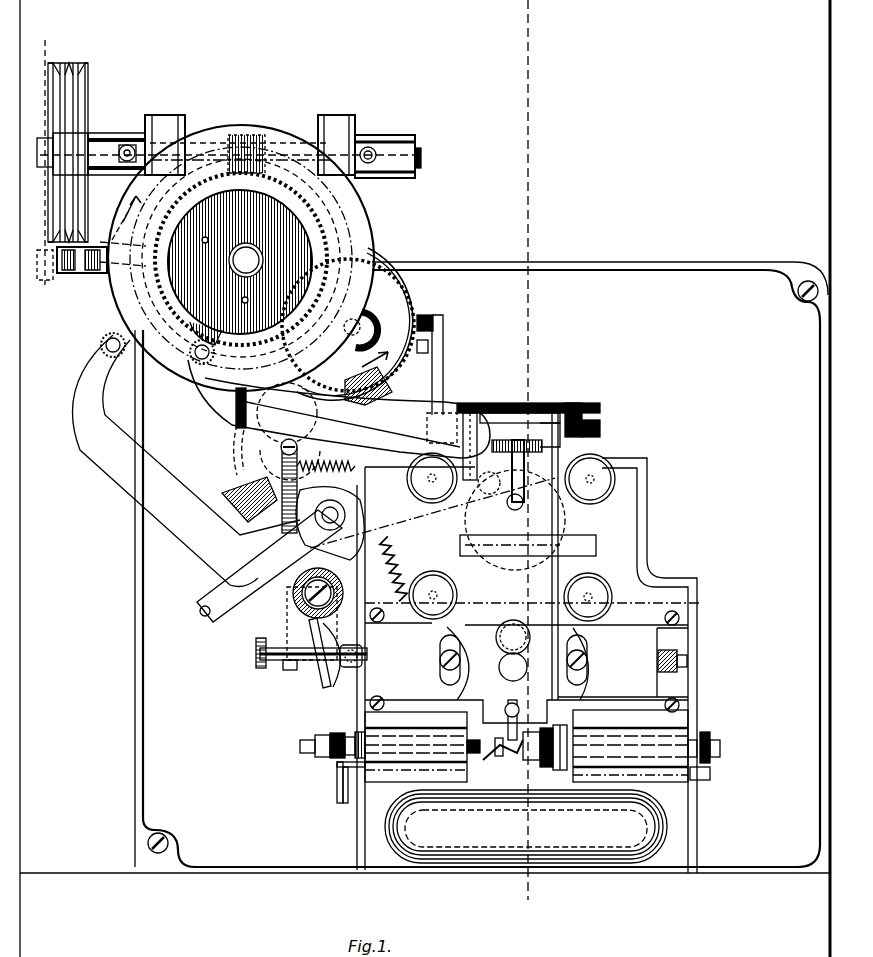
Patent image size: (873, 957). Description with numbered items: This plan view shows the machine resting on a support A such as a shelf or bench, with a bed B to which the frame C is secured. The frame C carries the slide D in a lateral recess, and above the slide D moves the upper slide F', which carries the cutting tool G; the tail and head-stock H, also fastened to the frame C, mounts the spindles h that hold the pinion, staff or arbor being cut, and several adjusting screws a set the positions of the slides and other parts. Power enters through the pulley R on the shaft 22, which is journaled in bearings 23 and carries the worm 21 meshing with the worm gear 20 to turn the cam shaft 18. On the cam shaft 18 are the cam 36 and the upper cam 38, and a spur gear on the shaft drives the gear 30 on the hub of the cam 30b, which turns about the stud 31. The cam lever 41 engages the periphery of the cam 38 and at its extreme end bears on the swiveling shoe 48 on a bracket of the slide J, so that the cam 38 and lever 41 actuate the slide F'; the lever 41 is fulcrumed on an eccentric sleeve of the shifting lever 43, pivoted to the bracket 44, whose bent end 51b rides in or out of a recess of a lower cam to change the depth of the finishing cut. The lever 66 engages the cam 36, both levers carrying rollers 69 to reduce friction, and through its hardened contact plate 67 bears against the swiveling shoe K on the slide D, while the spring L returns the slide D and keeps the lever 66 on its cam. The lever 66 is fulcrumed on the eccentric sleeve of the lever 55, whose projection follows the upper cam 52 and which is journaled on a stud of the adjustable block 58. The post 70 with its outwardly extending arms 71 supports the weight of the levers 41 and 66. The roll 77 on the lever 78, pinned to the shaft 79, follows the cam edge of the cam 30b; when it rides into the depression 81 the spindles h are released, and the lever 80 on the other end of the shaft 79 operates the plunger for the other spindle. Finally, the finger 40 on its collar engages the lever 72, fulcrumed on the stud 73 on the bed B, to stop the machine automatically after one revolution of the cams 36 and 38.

The support A is at (690, 169).
The bed B is at (481, 564).
The pulley R is at (86, 102).
The bearings 23 is at (126, 140).
The worm 21 is at (250, 134).
The shaft 22 is at (421, 158).
The worm gear 20 is at (340, 207).
The cam 36 is at (368, 220).
The upper cam 38 is at (192, 220).
The cam shaft 18 is at (246, 260).
The spur gear 30 is at (394, 262).
The cam 30b is at (420, 296).
The stud 31 is at (352, 346).
The lever 72 is at (52, 284).
The stud 73 is at (82, 278).
The finger 40 is at (111, 284).
The rollers 69 is at (100, 348).
The cam lever 41 is at (339, 409).
The post 70 is at (233, 450).
The arms 71 is at (240, 495).
The roll 77 is at (435, 326).
The depression 81 is at (430, 346).
The lever 78 is at (445, 392).
The swiveling shoe 48 is at (470, 420).
The slide J is at (518, 440).
The bracket 44 is at (553, 404).
The lever 80 is at (575, 416).
The shaft 79 is at (599, 425).
The adjusting screws a is at (420, 486).
The frame C is at (648, 492).
The slide F' is at (538, 641).
The shifting lever 43 is at (433, 536).
The slide D is at (623, 662).
The spring L is at (680, 672).
The upper cam 52 is at (362, 510).
The lever 55 is at (290, 573).
The bent free end 51b is at (328, 587).
The lever 66 is at (277, 614).
The block 58 is at (294, 668).
The swiveling shoe K is at (338, 646).
The contact plate 67 is at (318, 690).
The tail and head-stock H is at (365, 722).
The spindles h is at (331, 758).
The cutting tool G is at (505, 756).